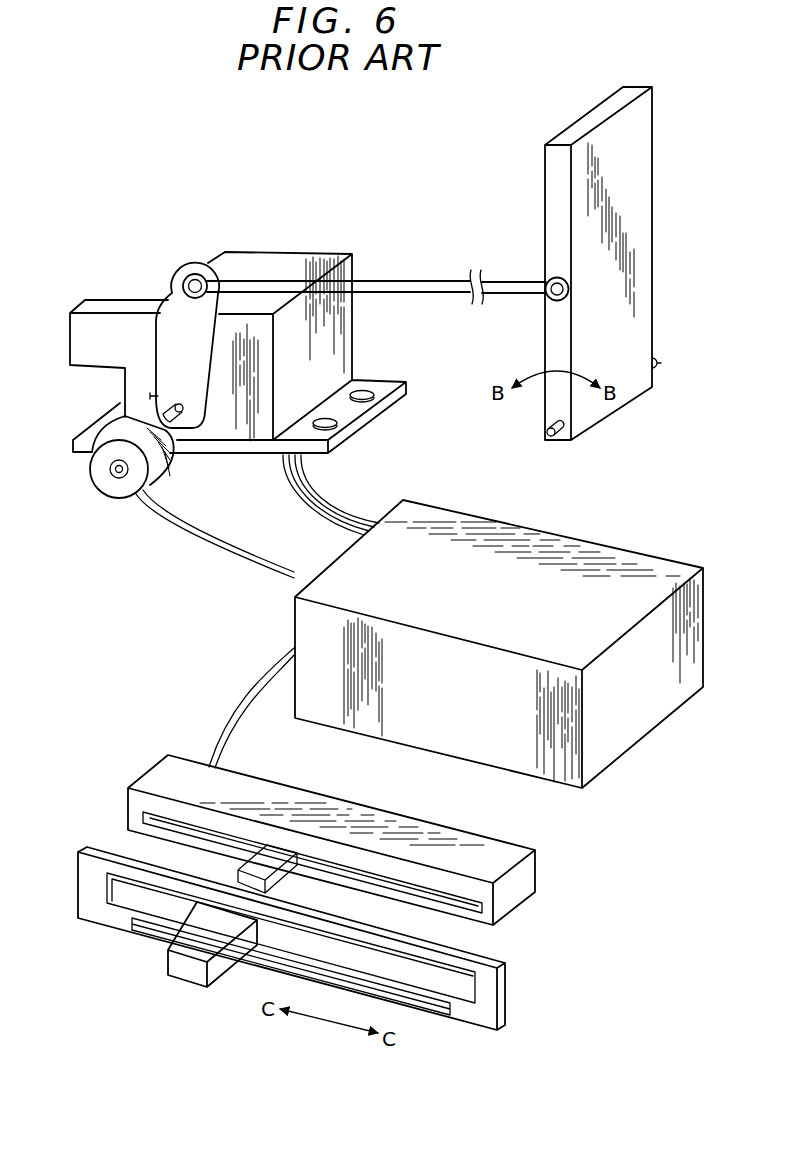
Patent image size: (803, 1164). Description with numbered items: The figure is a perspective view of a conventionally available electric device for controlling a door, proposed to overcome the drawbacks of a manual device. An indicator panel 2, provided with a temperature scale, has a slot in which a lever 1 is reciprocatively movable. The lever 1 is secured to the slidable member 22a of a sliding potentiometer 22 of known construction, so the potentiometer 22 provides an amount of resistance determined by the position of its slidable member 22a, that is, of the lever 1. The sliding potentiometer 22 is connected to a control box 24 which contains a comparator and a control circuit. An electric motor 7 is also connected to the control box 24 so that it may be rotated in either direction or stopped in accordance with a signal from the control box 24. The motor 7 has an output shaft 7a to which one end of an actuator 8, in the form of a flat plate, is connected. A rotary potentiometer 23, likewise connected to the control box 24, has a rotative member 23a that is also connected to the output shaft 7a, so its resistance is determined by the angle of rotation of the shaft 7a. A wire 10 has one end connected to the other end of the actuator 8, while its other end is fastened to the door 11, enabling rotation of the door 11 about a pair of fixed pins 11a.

The lever 1 is at (186, 975).
The indicator panel 2 is at (485, 1009).
The electric motor 7 is at (358, 356).
The output shaft 7a is at (178, 426).
The actuator 8 is at (176, 291).
The wire 10 is at (413, 281).
The door 11 is at (655, 153).
The fixed pins 11a is at (561, 441).
The sliding potentiometer 22 is at (540, 880).
The slidable member 22a is at (278, 876).
The rotary potentiometer 23 is at (88, 482).
The rotative member 23a is at (150, 395).
The control box 24 is at (610, 545).